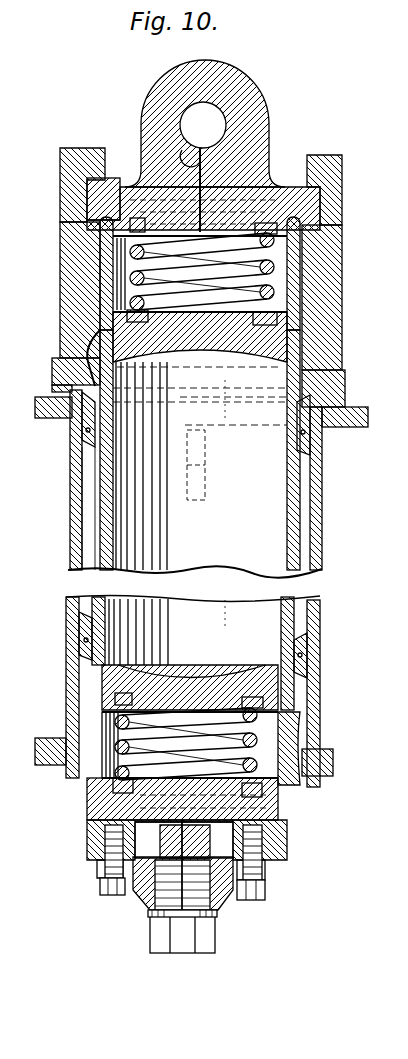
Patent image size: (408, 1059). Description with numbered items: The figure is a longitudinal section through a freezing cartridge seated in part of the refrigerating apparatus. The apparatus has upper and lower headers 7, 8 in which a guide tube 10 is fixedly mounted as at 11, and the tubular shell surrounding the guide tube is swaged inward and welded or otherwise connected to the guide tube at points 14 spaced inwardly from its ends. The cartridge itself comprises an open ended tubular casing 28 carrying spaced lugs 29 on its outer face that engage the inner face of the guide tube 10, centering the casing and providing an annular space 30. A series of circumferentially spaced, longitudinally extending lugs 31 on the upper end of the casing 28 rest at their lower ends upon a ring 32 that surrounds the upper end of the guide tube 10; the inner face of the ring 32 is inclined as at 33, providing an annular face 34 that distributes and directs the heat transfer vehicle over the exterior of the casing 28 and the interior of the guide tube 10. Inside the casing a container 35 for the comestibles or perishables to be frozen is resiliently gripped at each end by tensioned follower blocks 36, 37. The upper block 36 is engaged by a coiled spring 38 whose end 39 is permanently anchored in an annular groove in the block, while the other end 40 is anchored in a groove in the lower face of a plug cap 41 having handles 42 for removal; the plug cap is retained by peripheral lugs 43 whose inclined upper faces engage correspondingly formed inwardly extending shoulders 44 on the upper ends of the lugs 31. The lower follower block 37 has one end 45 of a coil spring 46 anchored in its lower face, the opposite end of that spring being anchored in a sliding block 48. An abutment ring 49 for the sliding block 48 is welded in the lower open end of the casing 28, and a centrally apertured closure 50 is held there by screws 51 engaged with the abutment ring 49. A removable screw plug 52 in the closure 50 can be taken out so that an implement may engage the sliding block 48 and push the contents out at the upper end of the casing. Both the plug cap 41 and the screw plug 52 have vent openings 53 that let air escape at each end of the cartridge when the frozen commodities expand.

The upper header 7 is at (358, 420).
The lower header 8 is at (335, 765).
The guide tube 10 is at (312, 442).
The fixed mounting of guide tube 11 is at (322, 428).
The shell connection point 14 is at (310, 742).
The tubular casing 28 is at (100, 548).
The spaced lugs 29 is at (88, 472).
The annular space 30 is at (85, 572).
The longitudinally extending lugs 31 is at (335, 305).
The ring 32 is at (52, 386).
The inclined inner face 33 is at (56, 362).
The annular face 34 is at (90, 360).
The container 35 is at (268, 625).
The upper follower block 36 is at (245, 352).
The lower follower block 37 is at (230, 682).
The coiled spring 38 is at (133, 252).
The end of coiled spring 39 is at (280, 300).
The other end of coil spring 40 is at (130, 190).
The plug cap 41 is at (256, 200).
The handles 42 is at (238, 84).
The peripheral lugs 43 is at (78, 197).
The inwardly extending shoulders 44 is at (96, 180).
The end of coil spring 45 is at (116, 692).
The coil spring 46 is at (118, 722).
The sliding block 48 is at (112, 803).
The abutment ring 49 is at (102, 832).
The closure 50 is at (140, 900).
The screws 51 is at (100, 886).
The screw plug 52 is at (160, 920).
The vent openings 53 is at (176, 965).